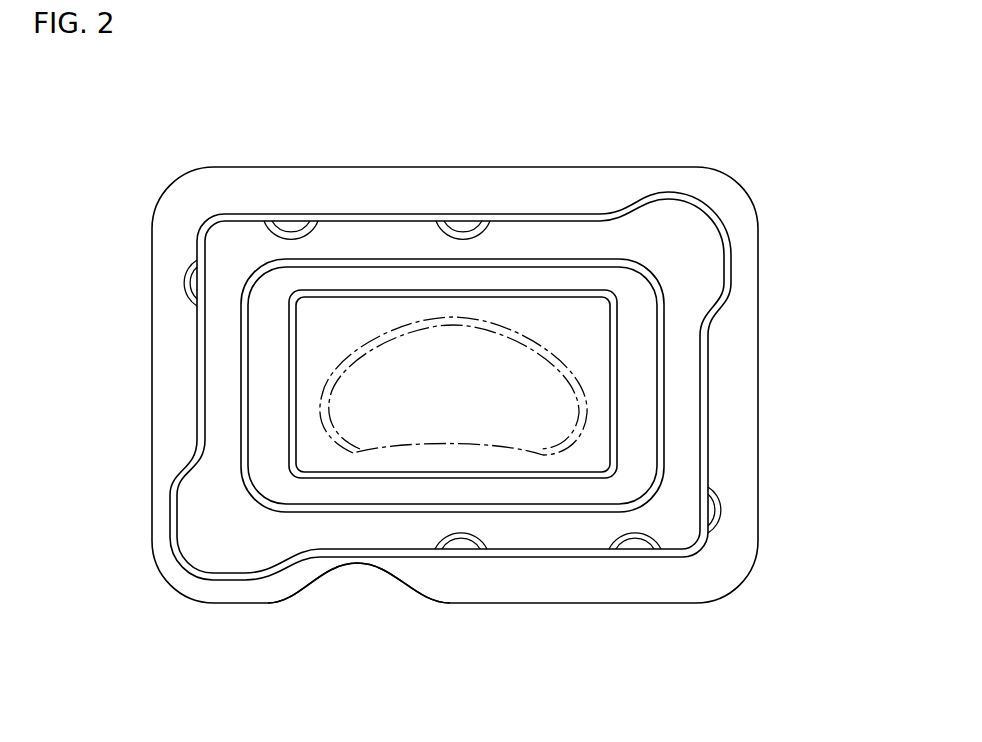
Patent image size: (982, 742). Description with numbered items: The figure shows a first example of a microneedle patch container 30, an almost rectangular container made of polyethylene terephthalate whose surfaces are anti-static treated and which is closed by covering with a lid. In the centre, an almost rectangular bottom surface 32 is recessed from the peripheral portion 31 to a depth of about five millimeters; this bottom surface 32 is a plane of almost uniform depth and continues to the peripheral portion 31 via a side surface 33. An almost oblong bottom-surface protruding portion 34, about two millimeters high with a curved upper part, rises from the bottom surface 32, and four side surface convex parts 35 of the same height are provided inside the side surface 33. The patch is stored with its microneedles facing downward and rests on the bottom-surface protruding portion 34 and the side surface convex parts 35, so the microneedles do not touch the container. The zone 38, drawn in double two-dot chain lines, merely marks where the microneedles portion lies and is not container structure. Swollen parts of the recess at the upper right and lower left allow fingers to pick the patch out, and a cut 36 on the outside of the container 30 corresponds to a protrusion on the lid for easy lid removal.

The microneedle patch container 30 is at (158, 190).
The peripheral portion 31 is at (525, 175).
The bottom surface 32 is at (714, 252).
The side surface 33 is at (575, 213).
The bottom-surface protruding portion 34 is at (613, 357).
The side surface convex parts 35 is at (633, 545).
The cut 36 is at (370, 563).
The zone 38 is at (474, 398).